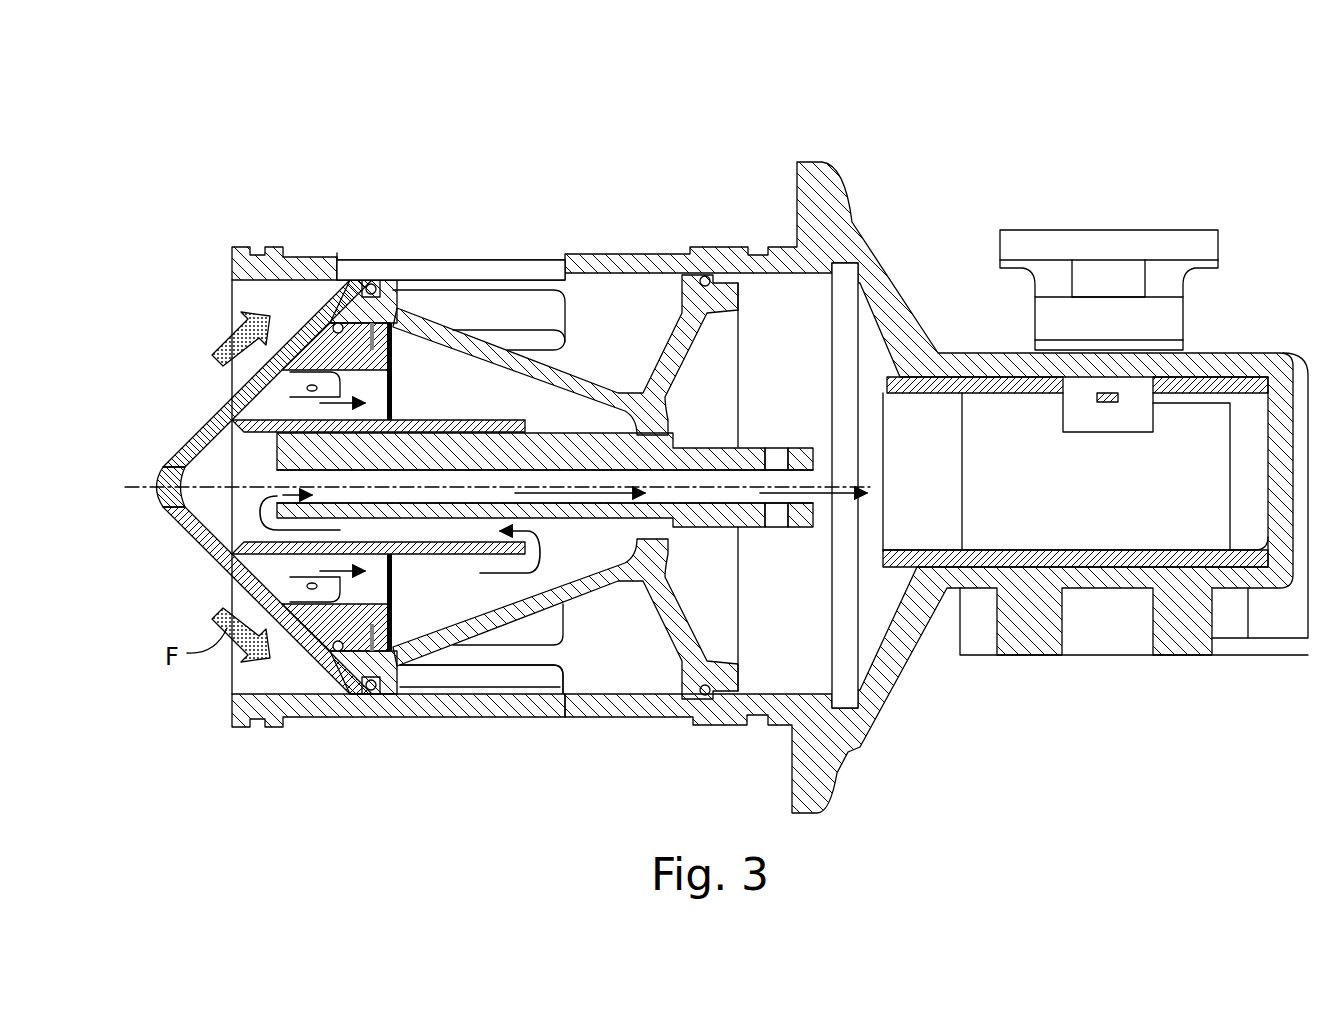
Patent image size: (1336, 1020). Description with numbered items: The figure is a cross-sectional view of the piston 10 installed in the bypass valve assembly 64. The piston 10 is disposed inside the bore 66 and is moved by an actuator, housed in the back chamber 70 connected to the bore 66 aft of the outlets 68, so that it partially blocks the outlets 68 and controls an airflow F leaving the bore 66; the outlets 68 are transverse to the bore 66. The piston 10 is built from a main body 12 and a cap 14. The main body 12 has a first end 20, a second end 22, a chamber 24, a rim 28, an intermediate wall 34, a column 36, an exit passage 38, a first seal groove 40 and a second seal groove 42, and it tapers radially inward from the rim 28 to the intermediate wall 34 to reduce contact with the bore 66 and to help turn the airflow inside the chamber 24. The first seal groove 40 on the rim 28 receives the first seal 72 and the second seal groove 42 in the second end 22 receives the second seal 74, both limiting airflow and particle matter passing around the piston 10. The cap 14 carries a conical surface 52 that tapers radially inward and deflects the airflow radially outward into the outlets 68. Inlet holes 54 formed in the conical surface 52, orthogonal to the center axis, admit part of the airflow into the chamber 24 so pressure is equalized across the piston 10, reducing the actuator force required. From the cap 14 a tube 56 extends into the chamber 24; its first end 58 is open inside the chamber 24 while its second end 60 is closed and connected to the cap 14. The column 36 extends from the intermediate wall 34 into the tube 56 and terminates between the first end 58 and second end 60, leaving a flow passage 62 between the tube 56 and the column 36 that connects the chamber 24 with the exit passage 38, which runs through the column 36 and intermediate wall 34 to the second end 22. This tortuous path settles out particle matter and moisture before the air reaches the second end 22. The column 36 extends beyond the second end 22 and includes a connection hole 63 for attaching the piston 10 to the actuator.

The piston 10 is at (186, 412).
The main body 12 is at (599, 598).
The cap 14 is at (163, 511).
The first end 20 is at (368, 694).
The second end 22 is at (740, 295).
The chamber 24 is at (435, 387).
The rim 28 is at (383, 310).
The intermediate wall 34 is at (657, 558).
The column 36 is at (565, 506).
The exit passage 38 is at (683, 478).
The first seal groove 40 is at (395, 665).
The second seal groove 42 is at (712, 666).
The conical surface 52 is at (200, 545).
The inlet holes 54 is at (316, 365).
The tube 56 is at (415, 556).
The first end 58 is at (500, 425).
The second end 60 is at (273, 428).
The flow passage 62 is at (242, 525).
The connection hole 63 is at (774, 456).
The bypass valve assembly 64 is at (446, 152).
The bore 66 is at (257, 298).
The outlets 68 is at (353, 273).
The back chamber 70 is at (1075, 497).
The first seal 72 is at (378, 286).
The second seal 74 is at (705, 272).